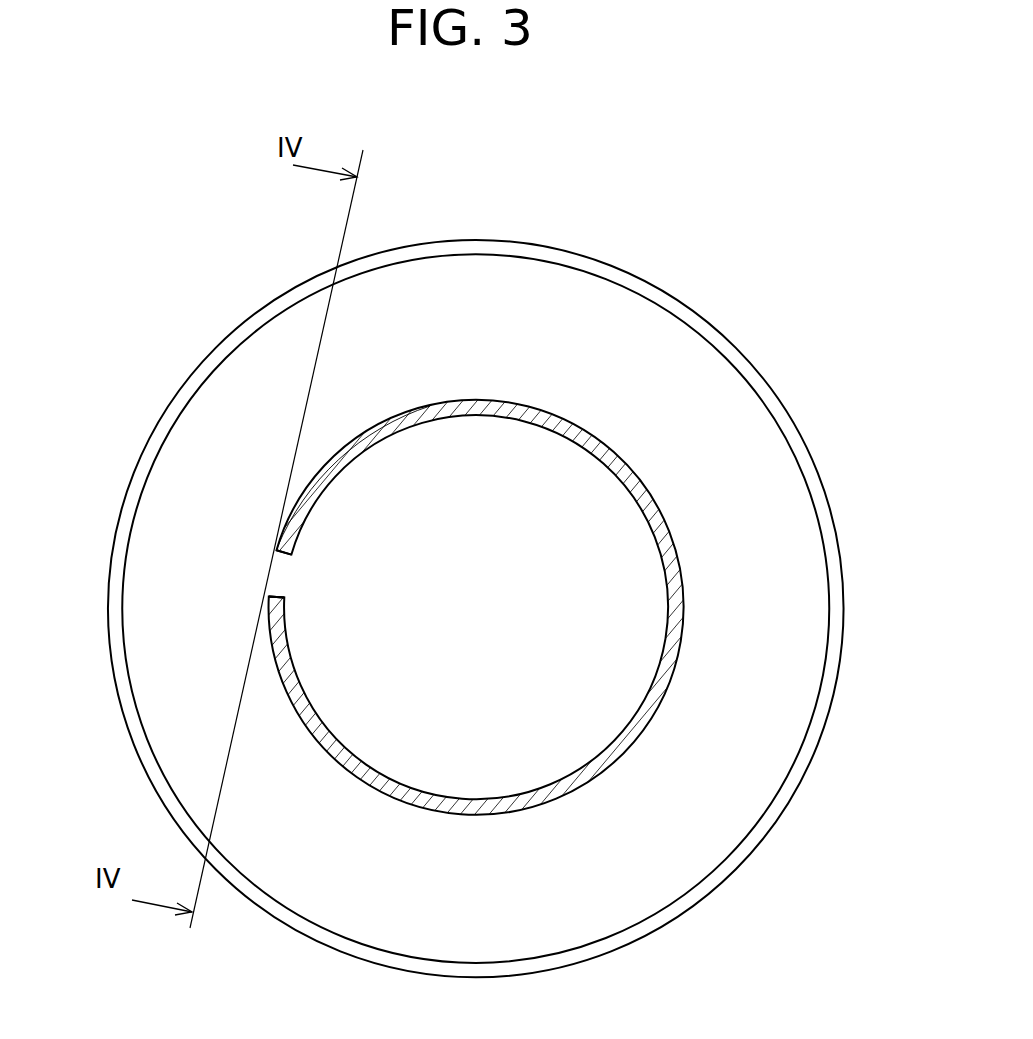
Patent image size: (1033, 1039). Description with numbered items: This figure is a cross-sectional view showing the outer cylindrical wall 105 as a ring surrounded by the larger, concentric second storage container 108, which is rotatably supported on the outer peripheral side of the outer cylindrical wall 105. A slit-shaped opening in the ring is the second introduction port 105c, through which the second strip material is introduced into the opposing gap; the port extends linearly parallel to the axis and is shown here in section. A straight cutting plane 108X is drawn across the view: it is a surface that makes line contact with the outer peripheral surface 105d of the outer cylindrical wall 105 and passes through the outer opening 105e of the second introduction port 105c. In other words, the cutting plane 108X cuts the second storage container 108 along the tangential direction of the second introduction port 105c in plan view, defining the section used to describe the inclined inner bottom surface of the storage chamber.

The second storage container 108 is at (205, 352).
The cutting plane 108X is at (345, 228).
The outer cylindrical wall 105 is at (638, 467).
The second introduction port 105c is at (277, 575).
The outer peripheral surface 105d is at (363, 430).
The outer opening 105e is at (270, 595).